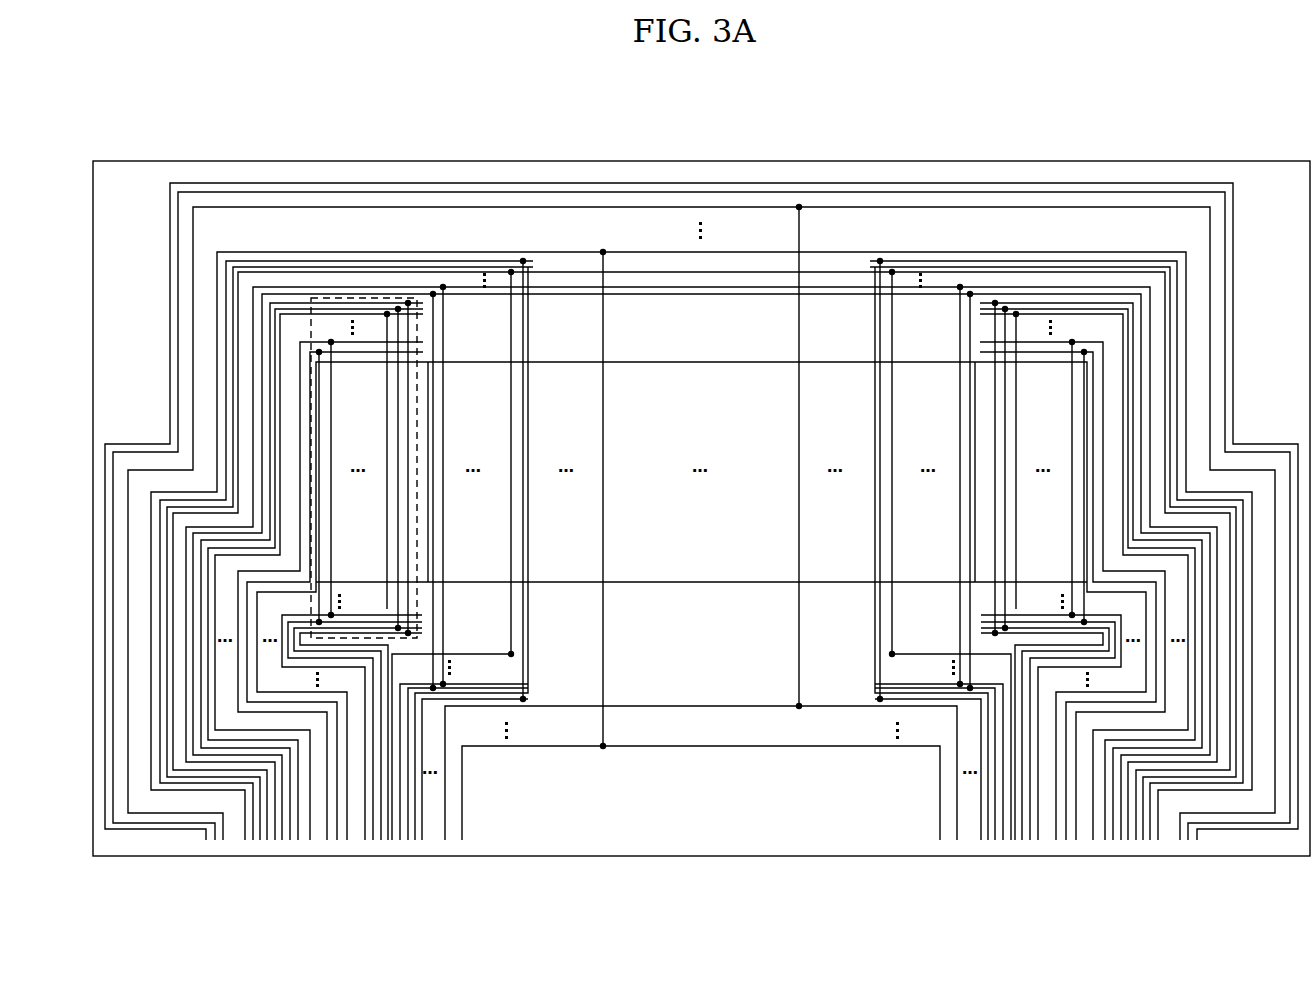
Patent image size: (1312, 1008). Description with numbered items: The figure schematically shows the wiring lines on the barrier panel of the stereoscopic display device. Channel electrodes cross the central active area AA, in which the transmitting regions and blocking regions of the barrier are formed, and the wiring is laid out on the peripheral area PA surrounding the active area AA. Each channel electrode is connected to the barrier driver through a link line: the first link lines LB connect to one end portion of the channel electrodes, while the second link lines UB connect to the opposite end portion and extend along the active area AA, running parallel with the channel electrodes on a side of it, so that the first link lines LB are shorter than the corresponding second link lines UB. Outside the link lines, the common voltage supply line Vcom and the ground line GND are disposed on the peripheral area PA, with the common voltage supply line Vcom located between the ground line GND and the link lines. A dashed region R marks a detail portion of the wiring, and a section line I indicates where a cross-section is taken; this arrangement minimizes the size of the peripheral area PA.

The peripheral area PA is at (701, 508).
The active area AA is at (701, 472).
The region R is at (371, 297).
The common voltage supply line Vcom is at (163, 822).
The ground line GND is at (1197, 838).
The second link lines UB is at (218, 866).
The first link lines LB is at (343, 866).
The section line I-I' I is at (183, 300).